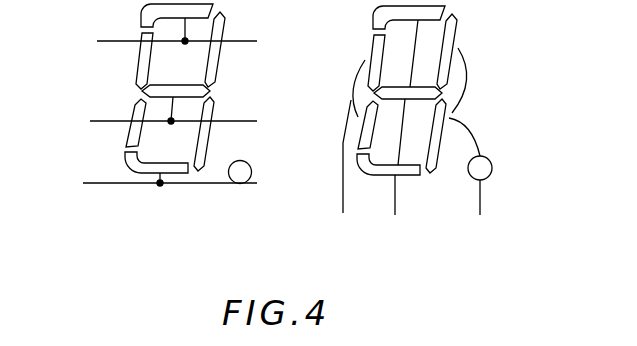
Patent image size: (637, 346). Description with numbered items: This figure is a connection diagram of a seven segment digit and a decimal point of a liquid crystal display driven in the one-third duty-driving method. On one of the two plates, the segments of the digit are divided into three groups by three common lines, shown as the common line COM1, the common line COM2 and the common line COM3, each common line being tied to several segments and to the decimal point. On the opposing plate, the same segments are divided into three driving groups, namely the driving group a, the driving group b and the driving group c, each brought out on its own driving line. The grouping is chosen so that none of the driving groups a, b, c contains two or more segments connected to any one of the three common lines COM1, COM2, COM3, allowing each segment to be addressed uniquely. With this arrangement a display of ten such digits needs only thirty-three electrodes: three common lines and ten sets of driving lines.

The common line COM1 is at (213, 37).
The common line COM2 is at (210, 116).
The common line COM3 is at (206, 178).
The driving group a is at (470, 144).
The driving group b is at (406, 128).
The driving group c is at (352, 148).